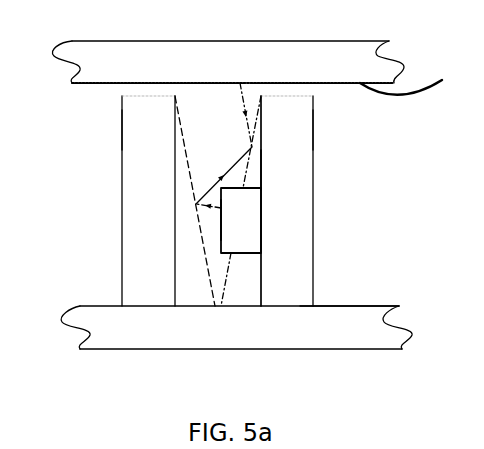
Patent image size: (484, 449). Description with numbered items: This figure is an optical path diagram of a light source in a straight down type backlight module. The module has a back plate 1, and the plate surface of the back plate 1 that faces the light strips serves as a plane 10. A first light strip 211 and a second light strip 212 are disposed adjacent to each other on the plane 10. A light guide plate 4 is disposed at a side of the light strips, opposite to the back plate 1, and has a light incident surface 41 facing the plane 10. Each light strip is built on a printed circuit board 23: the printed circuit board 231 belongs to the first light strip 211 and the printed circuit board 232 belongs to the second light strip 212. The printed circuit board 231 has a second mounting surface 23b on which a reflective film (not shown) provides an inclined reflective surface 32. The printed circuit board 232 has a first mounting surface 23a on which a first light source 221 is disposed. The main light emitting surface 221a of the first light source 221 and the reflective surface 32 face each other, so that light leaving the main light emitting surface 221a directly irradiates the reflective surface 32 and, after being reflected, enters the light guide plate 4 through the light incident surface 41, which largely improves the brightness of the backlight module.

The back plate 1 is at (340, 340).
The plane 10 is at (329, 306).
The light guide plate 4 is at (329, 67).
The light incident surface 41 is at (417, 82).
The light guide 23 is at (164, 242).
The printed circuit board 231 is at (155, 295).
The printed circuit board 232 is at (291, 288).
The first light strip 211 is at (121, 137).
The second light strip 212 is at (313, 137).
The first mounting surface 23a is at (261, 173).
The second mounting surface 23b is at (175, 185).
The first light source 221 is at (251, 234).
The main light emitting surface 221a is at (221, 222).
The reflective surface 32 is at (207, 270).